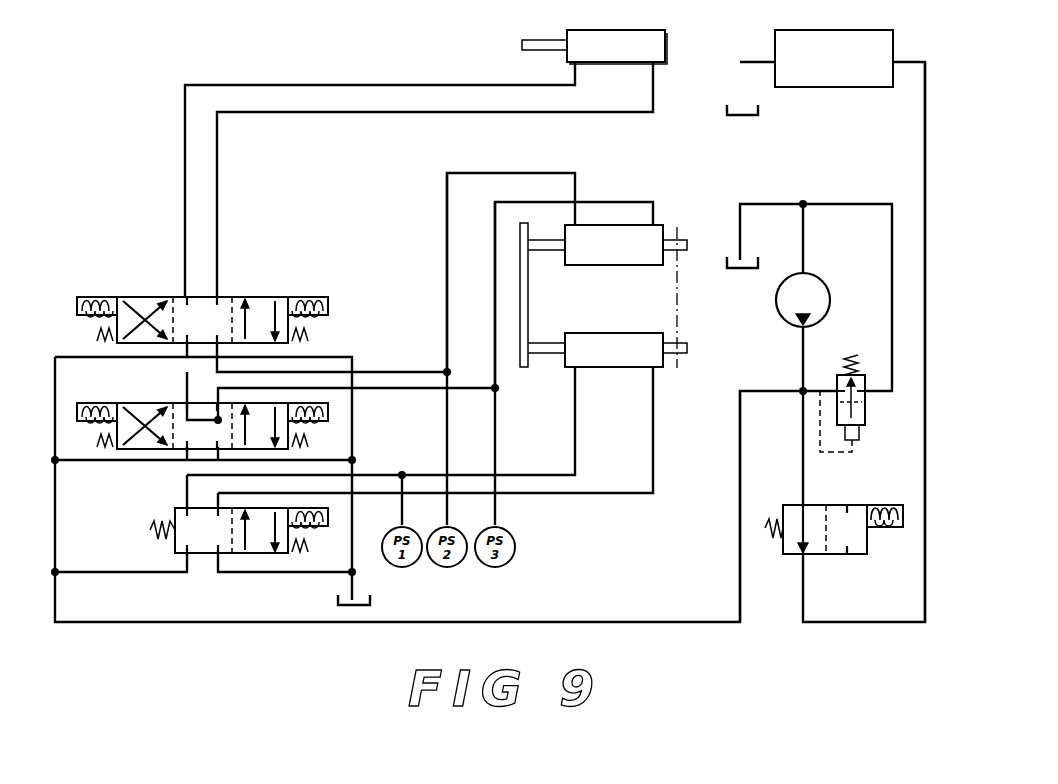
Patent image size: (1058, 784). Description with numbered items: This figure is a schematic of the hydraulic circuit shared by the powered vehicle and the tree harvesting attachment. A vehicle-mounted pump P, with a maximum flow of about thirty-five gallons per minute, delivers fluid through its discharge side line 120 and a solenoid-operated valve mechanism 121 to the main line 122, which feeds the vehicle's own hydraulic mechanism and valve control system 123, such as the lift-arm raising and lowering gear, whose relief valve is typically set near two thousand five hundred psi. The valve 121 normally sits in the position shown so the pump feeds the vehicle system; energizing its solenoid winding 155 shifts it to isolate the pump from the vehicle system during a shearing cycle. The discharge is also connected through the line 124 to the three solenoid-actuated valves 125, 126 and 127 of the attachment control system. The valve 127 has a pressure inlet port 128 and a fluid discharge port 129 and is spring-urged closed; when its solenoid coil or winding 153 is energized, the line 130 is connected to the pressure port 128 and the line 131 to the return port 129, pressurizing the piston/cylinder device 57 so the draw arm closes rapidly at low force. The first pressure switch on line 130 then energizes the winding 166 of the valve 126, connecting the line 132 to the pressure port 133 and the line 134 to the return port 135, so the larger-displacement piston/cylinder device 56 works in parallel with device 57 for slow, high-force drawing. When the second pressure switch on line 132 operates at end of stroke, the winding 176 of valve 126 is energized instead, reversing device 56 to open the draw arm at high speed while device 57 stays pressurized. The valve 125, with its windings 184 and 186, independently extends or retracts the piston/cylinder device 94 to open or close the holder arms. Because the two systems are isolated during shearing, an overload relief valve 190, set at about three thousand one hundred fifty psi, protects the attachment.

The piston/cylinder device 94 is at (628, 57).
The piston/cylinder device 56 is at (626, 255).
The piston/cylinder device 57 is at (626, 361).
The discharge side line 120 is at (798, 349).
The valve mechanism 121 is at (822, 508).
The main line 122 is at (922, 456).
The hydraulic mechanism and valve control system 123 is at (860, 28).
The line 124 is at (740, 502).
The valve 125 is at (150, 295).
The valve 126 is at (161, 401).
The valve 127 is at (204, 564).
The pressure inlet port 128 is at (185, 564).
The fluid discharge port 129 is at (218, 564).
The line 130 is at (552, 473).
The line 131 is at (582, 495).
The line 132 is at (446, 290).
The pressure port 133 is at (184, 462).
The line 134 is at (495, 320).
The return port 135 is at (215, 456).
The solenoid coil or winding 153 is at (298, 532).
The solenoid coil or winding 155 is at (905, 505).
The solenoid coil or winding 166 is at (312, 424).
The solenoid winding or coil 176 is at (78, 402).
The winding 184 is at (324, 296).
The winding 186 is at (78, 296).
The overload relief valve 190 is at (867, 420).